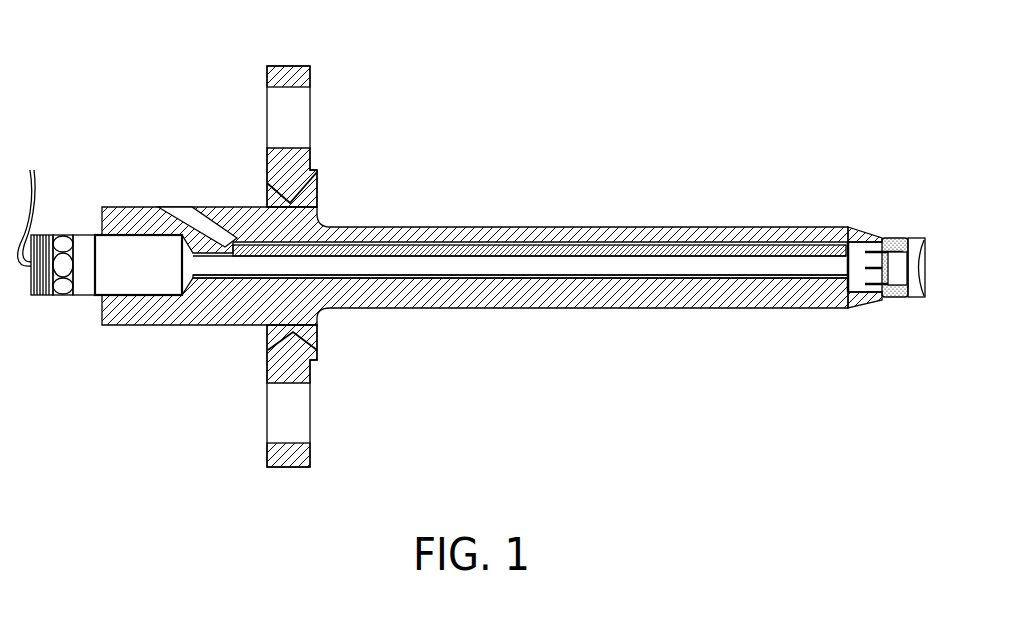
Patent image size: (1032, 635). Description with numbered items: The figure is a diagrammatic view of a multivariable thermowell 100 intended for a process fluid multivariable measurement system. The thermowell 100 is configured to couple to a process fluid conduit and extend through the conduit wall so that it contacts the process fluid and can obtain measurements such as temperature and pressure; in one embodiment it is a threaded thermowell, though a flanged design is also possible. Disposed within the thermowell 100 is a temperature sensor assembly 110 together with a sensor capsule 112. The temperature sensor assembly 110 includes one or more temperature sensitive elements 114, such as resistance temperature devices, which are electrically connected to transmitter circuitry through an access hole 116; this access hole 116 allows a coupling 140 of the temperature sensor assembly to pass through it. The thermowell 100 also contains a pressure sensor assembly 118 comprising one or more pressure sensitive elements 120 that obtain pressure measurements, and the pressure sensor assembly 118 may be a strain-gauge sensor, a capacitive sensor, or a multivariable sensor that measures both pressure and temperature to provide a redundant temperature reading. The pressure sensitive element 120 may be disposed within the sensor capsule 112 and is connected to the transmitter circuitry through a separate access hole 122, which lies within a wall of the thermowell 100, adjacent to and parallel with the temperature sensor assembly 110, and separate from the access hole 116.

The thermowell 100 is at (172, 75).
The temperature sensor assembly 110 is at (786, 288).
The sensor capsule 112 is at (887, 238).
The temperature sensitive element 114 is at (837, 250).
The access hole 116 is at (560, 280).
The pressure sensor assembly 118 is at (850, 225).
The pressure sensitive element 120 is at (913, 240).
The access hole 122 is at (538, 243).
The coupling 140 is at (682, 267).